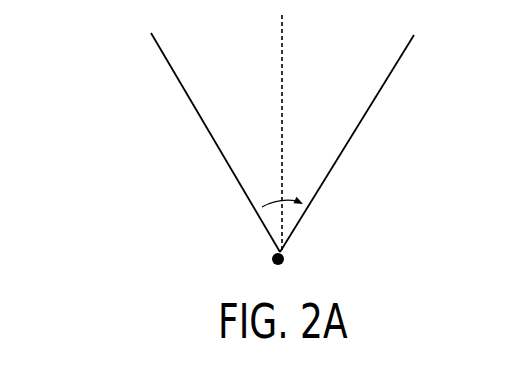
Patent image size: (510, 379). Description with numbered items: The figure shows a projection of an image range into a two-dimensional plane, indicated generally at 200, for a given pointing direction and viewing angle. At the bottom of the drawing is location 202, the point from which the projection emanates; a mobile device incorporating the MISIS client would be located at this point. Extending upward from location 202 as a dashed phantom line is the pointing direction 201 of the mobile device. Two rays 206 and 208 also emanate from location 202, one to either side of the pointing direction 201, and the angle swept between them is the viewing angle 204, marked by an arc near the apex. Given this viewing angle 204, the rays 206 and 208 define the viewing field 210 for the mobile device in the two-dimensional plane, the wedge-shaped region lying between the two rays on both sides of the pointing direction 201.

The projection of image range 200 is at (125, 72).
The pointing direction 201 is at (285, 132).
The location 202 is at (284, 261).
The viewing angle 204 is at (262, 207).
The ray 206 is at (340, 157).
The ray 208 is at (200, 118).
The viewing field 210 is at (245, 68).